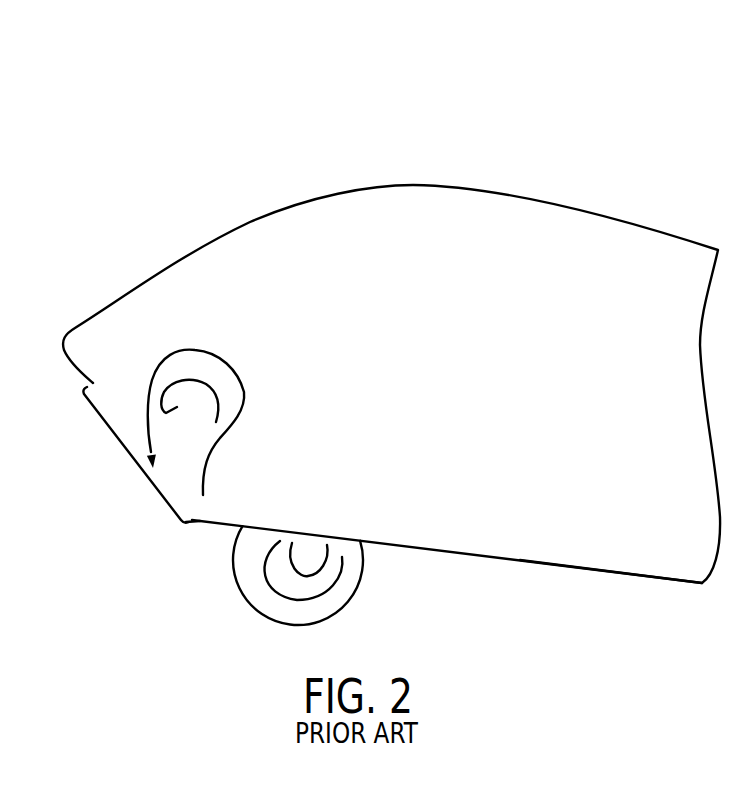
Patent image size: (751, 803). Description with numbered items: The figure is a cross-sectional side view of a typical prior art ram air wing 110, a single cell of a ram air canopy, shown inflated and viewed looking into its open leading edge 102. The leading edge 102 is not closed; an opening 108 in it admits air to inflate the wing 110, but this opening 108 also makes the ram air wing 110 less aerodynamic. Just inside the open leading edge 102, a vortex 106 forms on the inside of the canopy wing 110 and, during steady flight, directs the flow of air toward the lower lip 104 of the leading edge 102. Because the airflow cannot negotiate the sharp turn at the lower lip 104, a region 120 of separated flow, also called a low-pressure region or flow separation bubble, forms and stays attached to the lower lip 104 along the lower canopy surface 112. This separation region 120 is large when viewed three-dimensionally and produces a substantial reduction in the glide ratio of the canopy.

The open leading edge 102 is at (372, 329).
The lower lip 104 is at (190, 522).
The vortex 106 is at (241, 416).
The opening 108 is at (130, 460).
The ram air wing 110 is at (560, 98).
The lower canopy surface 112 is at (593, 568).
The region of separated flow 120 is at (355, 600).